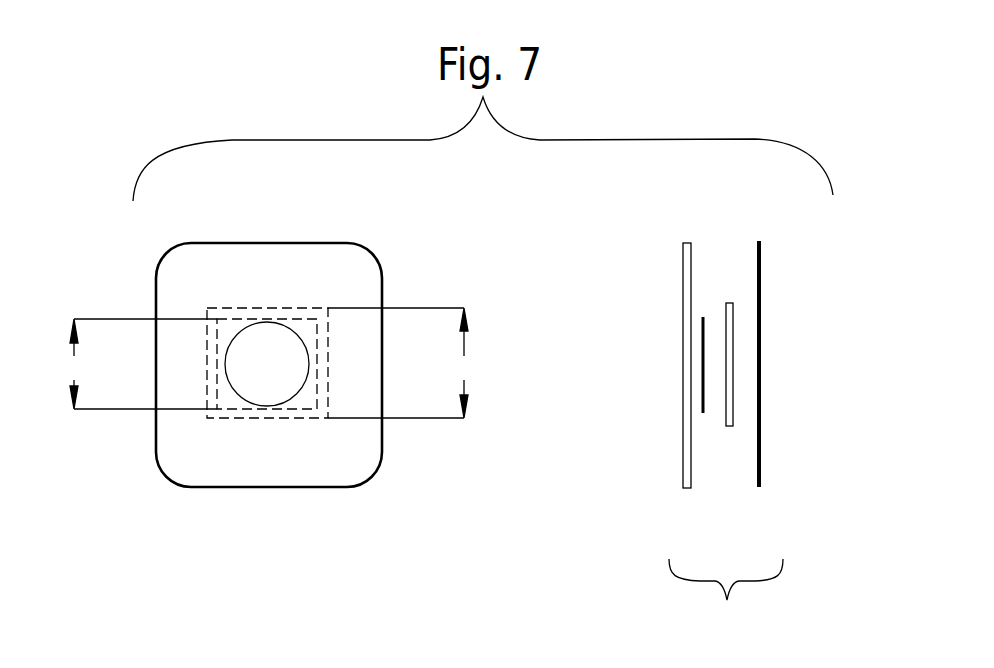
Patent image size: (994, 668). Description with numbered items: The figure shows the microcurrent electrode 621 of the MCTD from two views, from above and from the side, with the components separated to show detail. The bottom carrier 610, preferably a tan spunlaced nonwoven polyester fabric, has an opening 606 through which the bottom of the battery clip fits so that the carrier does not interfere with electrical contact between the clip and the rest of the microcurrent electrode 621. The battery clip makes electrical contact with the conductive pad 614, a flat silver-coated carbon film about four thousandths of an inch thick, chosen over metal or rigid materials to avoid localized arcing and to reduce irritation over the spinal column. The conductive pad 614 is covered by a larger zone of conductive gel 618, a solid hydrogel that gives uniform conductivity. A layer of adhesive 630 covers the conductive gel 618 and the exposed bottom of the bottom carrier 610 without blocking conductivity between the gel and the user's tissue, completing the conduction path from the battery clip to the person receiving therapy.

The opening 606 is at (301, 388).
The bottom carrier 610 is at (284, 283).
The conductive pad 614 is at (749, 181).
The conductive gel 618 is at (792, 221).
The microcurrent electrode 621 is at (726, 595).
The layer of adhesive 630 is at (760, 488).